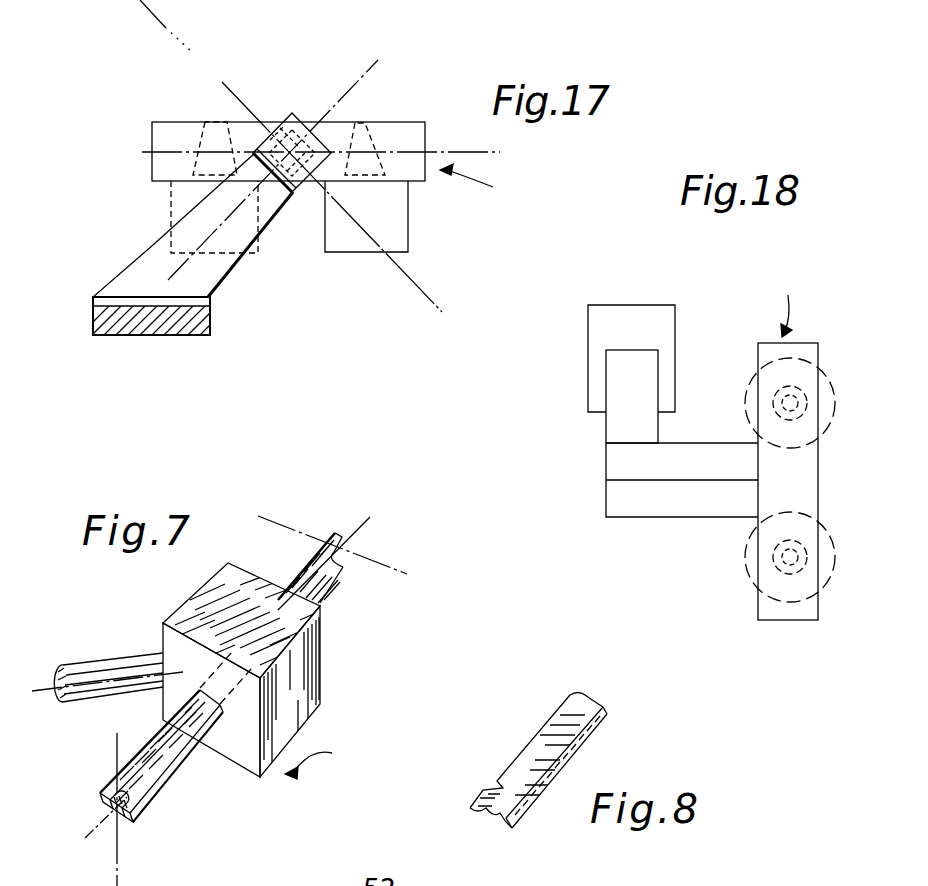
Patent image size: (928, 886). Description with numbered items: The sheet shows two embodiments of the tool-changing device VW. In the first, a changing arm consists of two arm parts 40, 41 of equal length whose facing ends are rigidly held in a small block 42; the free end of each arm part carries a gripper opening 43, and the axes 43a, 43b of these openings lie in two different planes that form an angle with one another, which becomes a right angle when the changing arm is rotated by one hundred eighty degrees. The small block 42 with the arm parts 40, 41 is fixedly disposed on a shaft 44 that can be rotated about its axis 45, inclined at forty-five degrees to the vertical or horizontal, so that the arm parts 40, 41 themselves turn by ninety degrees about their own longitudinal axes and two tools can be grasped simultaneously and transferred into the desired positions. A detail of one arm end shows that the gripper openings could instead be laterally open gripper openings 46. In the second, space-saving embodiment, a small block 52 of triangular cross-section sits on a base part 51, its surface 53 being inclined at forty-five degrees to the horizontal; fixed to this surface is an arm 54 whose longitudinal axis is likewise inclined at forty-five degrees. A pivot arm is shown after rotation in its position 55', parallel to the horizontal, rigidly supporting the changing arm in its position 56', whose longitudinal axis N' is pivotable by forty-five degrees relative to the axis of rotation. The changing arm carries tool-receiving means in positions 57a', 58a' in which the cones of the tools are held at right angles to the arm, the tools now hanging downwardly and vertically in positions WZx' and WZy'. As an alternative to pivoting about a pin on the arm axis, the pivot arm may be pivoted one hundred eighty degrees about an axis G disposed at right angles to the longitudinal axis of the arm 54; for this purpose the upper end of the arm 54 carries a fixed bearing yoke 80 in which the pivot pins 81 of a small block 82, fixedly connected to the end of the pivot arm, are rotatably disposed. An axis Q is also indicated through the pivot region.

In FIG. 7, the arm part 40 is at (146, 737).
In FIG. 8, the arm part 40 is at (584, 761).
In FIG. 7, the arm part 41 is at (354, 568).
In FIG. 8, the arm part 41 is at (575, 730).
In FIG. 7, the small block 42 is at (293, 707).
In FIG. 7, the gripper opening 43 is at (112, 820).
In FIG. 7, the axis of gripper opening 43a is at (117, 747).
In FIG. 7, the axis of gripper opening 43b is at (405, 577).
In FIG. 7, the shaft 44 is at (105, 670).
In FIG. 7, the axis 45 is at (42, 680).
In FIG. 8, the laterally open gripper opening 46 is at (495, 788).
In FIG. 17, the base part 51 is at (200, 320).
In FIG. 17, the small block 52 is at (128, 277).
In FIG. 18, the small block 52 is at (630, 315).
In FIG. 17, the surface of small block 53 is at (205, 159).
In FIG. 18, the surface of small block 53 is at (657, 333).
In FIG. 17, the arm 54 is at (268, 207).
In FIG. 18, the arm 54 is at (625, 412).
In FIG. 17, the pivot arm position 55' is at (272, 90).
In FIG. 18, the pivot arm position 55' is at (682, 449).
In FIG. 17, the changing arm position 56' is at (247, 119).
In FIG. 18, the changing arm position 56' is at (819, 481).
In FIG. 17, the tool-receiving means position 57a' is at (397, 116).
In FIG. 18, the tool-receiving means position 57a' is at (820, 566).
In FIG. 17, the tool-receiving means position 58a' is at (211, 116).
In FIG. 18, the tool-receiving means position 58a' is at (818, 389).
In FIG. 17, the bearing yoke 80 is at (293, 187).
In FIG. 17, the pivot pin 81 is at (276, 138).
In FIG. 17, the small block 82 is at (293, 147).
In FIG. 17, the longitudinal axis of changing arm N' is at (321, 105).
In FIG. 17, the axis Q is at (338, 103).
In FIG. 17, the axis G is at (417, 287).
In FIG. 17, the changing device VW is at (495, 187).
In FIG. 18, the changing device VW is at (800, 295).
In FIG. 7, the changing device VW is at (340, 757).
In FIG. 17, the tool position WZx' is at (410, 216).
In FIG. 18, the tool position WZx' is at (714, 595).
In FIG. 17, the tool position WZy' is at (123, 206).
In FIG. 18, the tool position WZy' is at (720, 358).